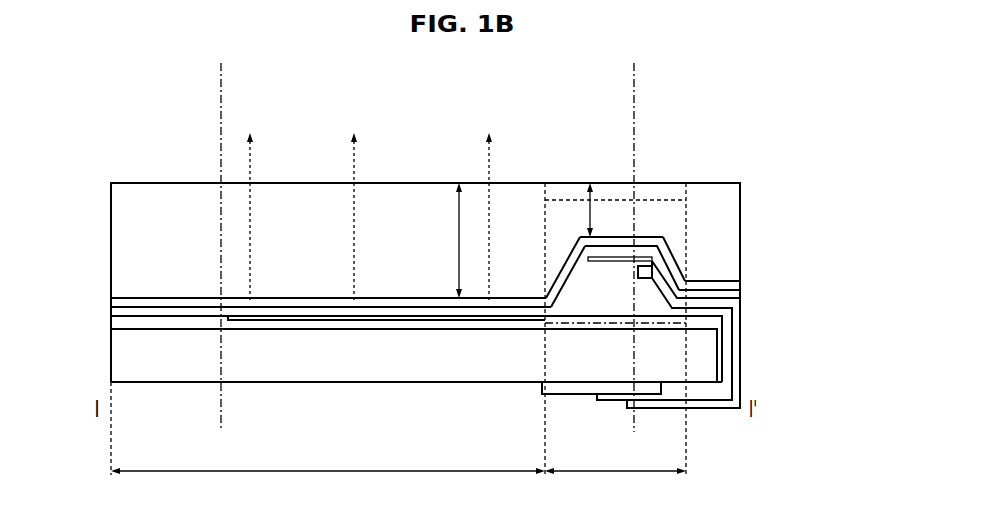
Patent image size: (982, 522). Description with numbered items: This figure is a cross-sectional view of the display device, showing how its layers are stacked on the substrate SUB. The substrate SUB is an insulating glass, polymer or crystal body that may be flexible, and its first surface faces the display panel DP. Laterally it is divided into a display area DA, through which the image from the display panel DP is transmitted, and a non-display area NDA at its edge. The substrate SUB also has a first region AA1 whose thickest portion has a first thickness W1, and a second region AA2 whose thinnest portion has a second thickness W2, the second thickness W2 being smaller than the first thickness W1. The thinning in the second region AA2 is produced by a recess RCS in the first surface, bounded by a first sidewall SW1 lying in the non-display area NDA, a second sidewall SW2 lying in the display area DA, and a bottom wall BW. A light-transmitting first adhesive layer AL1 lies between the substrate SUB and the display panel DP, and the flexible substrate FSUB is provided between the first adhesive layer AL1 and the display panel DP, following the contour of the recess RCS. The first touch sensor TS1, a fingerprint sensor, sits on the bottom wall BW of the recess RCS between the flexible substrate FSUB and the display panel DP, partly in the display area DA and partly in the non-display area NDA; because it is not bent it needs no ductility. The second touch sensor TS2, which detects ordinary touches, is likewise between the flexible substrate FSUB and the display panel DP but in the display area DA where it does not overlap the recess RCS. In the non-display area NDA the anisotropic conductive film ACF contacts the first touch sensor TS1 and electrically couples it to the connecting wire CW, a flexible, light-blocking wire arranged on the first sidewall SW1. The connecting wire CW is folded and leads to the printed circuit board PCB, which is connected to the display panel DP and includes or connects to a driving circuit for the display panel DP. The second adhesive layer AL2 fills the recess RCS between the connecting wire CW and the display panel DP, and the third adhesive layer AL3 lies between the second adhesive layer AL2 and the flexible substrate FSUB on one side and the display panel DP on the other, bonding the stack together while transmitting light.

The non-display area NDA is at (416, 247).
The display area DA is at (369, 181).
The substrate SUB is at (728, 200).
The recess RCS is at (690, 222).
The first adhesive layer AL1 is at (118, 301).
The second sidewall SW2 is at (573, 247).
The bottom wall BW is at (618, 234).
The first sidewall SW1 is at (668, 243).
The flexible substrate FSUB is at (641, 246).
The second adhesive layer AL2 is at (653, 297).
The first touch sensor TS1 is at (645, 259).
The anisotropic conductive film ACF is at (640, 272).
The connecting wire CW is at (733, 387).
The third adhesive layer AL3 is at (713, 323).
The second touch sensor TS2 is at (290, 322).
The display panel DP is at (713, 368).
The printed circuit board PCB is at (577, 388).
The first thickness W1 is at (450, 240).
The second thickness W2 is at (615, 210).
The first region AA1 is at (328, 340).
The second region AA2 is at (615, 340).